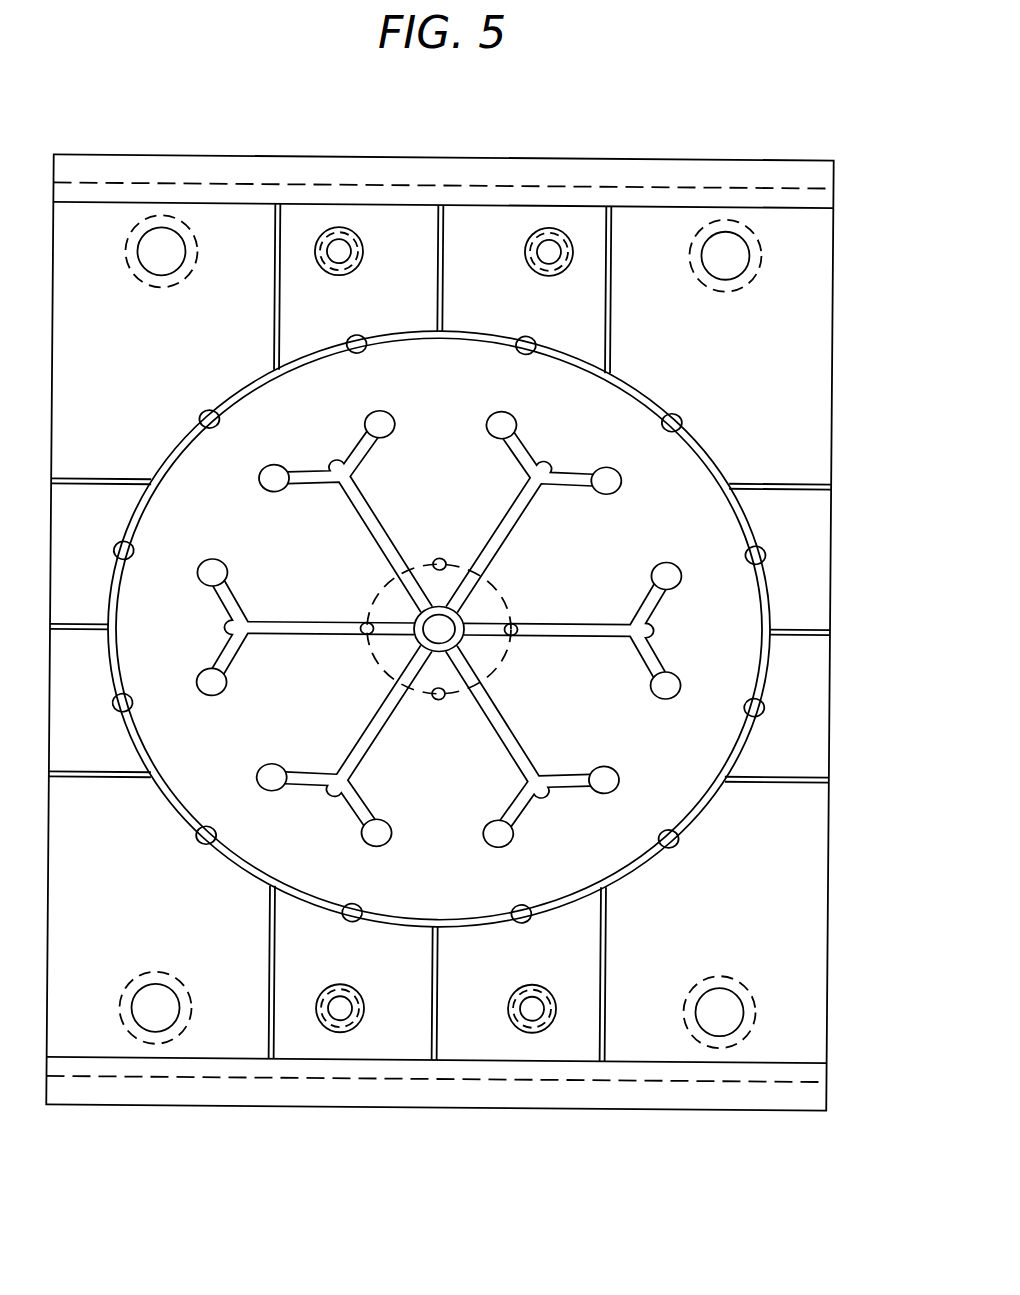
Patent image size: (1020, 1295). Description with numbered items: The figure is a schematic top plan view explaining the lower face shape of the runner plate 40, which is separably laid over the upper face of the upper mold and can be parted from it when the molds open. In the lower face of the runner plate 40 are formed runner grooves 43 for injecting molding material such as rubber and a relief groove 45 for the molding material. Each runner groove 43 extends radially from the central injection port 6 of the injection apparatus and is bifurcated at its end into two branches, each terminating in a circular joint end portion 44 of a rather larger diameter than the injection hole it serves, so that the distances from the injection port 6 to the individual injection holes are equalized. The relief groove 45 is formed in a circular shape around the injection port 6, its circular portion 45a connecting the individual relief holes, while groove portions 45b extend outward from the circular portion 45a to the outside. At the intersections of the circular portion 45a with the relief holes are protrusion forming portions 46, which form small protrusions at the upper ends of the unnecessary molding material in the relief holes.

The injection port 6 is at (464, 628).
The runner plate 40 is at (648, 1038).
The runner groove 43 is at (372, 532).
The joint end portion 44 is at (284, 464).
The relief groove 45 is at (486, 638).
The circular portion 45a is at (765, 607).
The groove portion 45b is at (612, 232).
The protrusion forming portion 46 is at (760, 558).